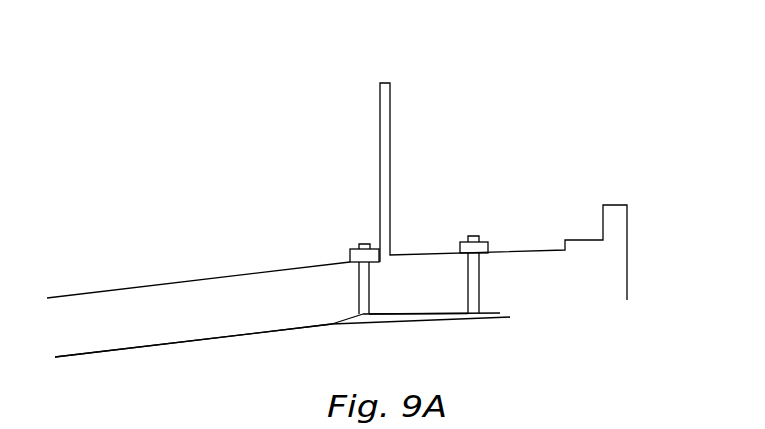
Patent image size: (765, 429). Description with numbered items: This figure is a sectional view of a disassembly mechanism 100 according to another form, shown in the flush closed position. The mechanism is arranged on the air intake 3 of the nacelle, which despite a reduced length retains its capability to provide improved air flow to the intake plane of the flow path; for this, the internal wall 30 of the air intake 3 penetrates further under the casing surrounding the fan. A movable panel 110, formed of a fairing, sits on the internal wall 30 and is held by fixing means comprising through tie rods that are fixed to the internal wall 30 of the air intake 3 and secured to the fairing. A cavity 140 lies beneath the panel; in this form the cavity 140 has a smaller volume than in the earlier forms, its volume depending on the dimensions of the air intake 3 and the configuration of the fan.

The air intake 3 is at (190, 255).
The internal wall 30 is at (195, 341).
The disassembly mechanism 100 is at (556, 120).
The movable panel 110 is at (387, 330).
The cavity 140 is at (410, 308).